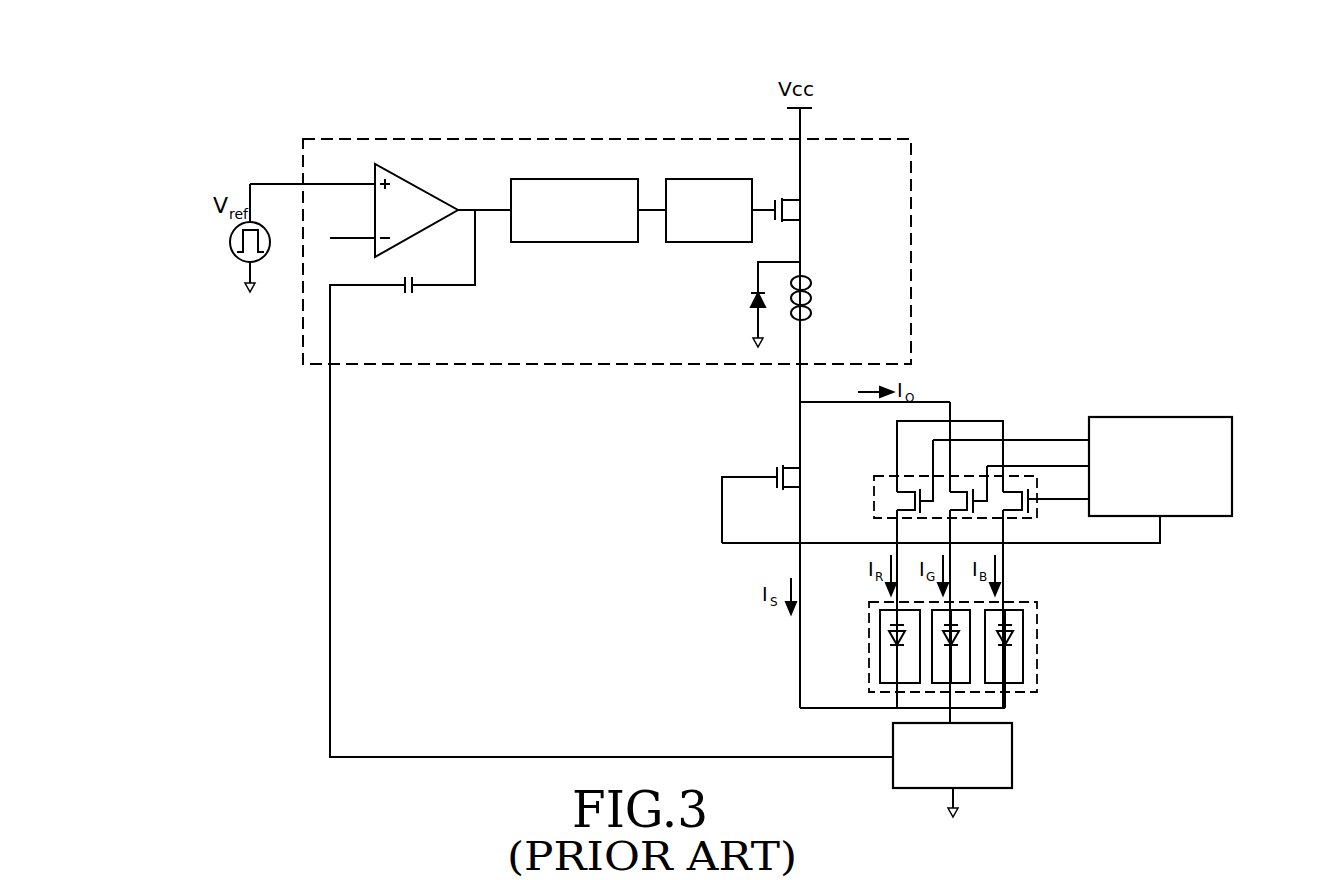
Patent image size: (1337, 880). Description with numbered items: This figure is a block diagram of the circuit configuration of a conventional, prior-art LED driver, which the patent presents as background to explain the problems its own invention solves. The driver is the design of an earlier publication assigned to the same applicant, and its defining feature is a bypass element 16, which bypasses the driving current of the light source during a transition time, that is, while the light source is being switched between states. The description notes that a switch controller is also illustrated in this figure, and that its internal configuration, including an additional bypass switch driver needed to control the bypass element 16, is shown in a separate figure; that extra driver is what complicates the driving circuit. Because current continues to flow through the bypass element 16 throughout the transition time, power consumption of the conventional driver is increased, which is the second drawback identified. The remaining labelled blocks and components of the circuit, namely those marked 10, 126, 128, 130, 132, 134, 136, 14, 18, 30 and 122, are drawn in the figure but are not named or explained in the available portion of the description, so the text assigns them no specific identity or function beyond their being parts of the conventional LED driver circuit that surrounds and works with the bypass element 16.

The LED driving circuit (prior art) 10 is at (986, 112).
The error amplifier / PWM modulation unit 126 is at (421, 189).
The gate circuit 128 is at (700, 179).
The switching transistor M1 130 is at (802, 203).
The inductor L 132 is at (795, 276).
The diode D1 134 is at (750, 300).
The filter unit 136 is at (686, 265).
The bypass element 16 is at (797, 466).
The switch unit 14 is at (874, 498).
The switch controller 18 is at (1157, 417).
The LED unit 30 is at (869, 645).
The current detector 122 is at (1014, 755).